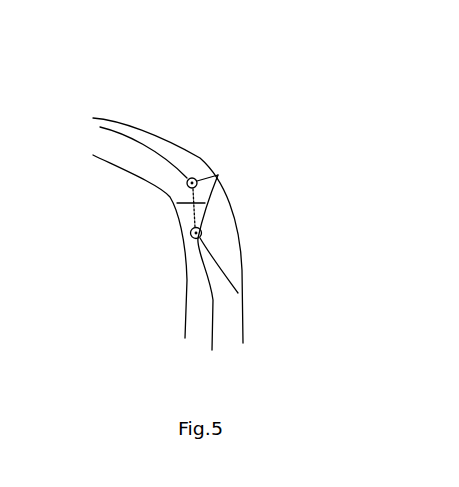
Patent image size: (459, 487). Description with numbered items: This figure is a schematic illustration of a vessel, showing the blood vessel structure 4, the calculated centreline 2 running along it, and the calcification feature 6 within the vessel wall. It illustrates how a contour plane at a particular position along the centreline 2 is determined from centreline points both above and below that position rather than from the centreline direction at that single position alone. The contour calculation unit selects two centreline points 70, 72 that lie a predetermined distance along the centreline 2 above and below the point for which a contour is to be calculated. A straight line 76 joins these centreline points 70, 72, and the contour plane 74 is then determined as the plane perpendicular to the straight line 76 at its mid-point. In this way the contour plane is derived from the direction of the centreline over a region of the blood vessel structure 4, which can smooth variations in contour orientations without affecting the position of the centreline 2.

The calculated centreline 2 is at (127, 135).
The blood vessel structure 4 is at (180, 137).
The calcification feature 6 is at (228, 255).
The centreline point 70 is at (186, 183).
The centreline point 72 is at (183, 236).
The contour plane 74 is at (178, 205).
The straight line 76 is at (218, 175).